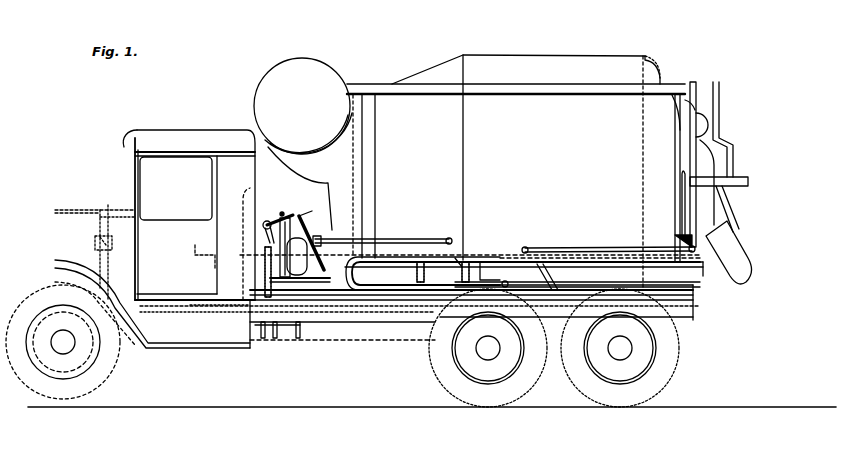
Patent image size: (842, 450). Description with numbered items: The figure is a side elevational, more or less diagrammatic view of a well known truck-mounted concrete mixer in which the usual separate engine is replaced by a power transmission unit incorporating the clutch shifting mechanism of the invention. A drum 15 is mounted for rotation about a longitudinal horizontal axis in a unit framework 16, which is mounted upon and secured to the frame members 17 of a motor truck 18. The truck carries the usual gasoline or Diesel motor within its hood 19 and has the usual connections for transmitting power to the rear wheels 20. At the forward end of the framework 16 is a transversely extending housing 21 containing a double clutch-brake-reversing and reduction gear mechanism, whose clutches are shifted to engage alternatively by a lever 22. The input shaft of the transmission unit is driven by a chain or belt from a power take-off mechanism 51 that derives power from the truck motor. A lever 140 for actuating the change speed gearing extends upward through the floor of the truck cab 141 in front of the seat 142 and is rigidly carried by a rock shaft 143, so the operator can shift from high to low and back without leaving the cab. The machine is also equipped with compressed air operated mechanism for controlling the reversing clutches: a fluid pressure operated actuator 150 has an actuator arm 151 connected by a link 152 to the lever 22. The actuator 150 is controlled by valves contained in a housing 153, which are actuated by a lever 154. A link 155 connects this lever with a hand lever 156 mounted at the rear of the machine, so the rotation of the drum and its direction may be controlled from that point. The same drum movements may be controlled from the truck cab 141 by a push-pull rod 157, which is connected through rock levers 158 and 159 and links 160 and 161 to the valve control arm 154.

The drum 15 is at (532, 57).
The unit framework 16 is at (680, 140).
The frame members 17 is at (372, 352).
The motor truck 18 is at (194, 359).
The hood 19 is at (68, 210).
The rear wheels 20 is at (572, 372).
The housing 21 is at (300, 255).
The lever 22 is at (302, 216).
The power take-off mechanism 51 is at (283, 340).
The lever 140 is at (185, 284).
The truck cab 141 is at (223, 178).
The seat 142 is at (196, 250).
The rock shaft 143 is at (234, 308).
The fluid pressure operated actuator 150 is at (450, 268).
The actuator arm 151 is at (452, 250).
The link 152 is at (415, 239).
The housing 153 is at (545, 276).
The lever 154 is at (524, 248).
The link 155 is at (604, 247).
The hand lever 156 is at (682, 200).
The push-pull rod 157 is at (108, 205).
The rock lever 158 is at (100, 237).
The rock lever 159 is at (378, 324).
The link 160 is at (158, 313).
The link 161 is at (487, 287).